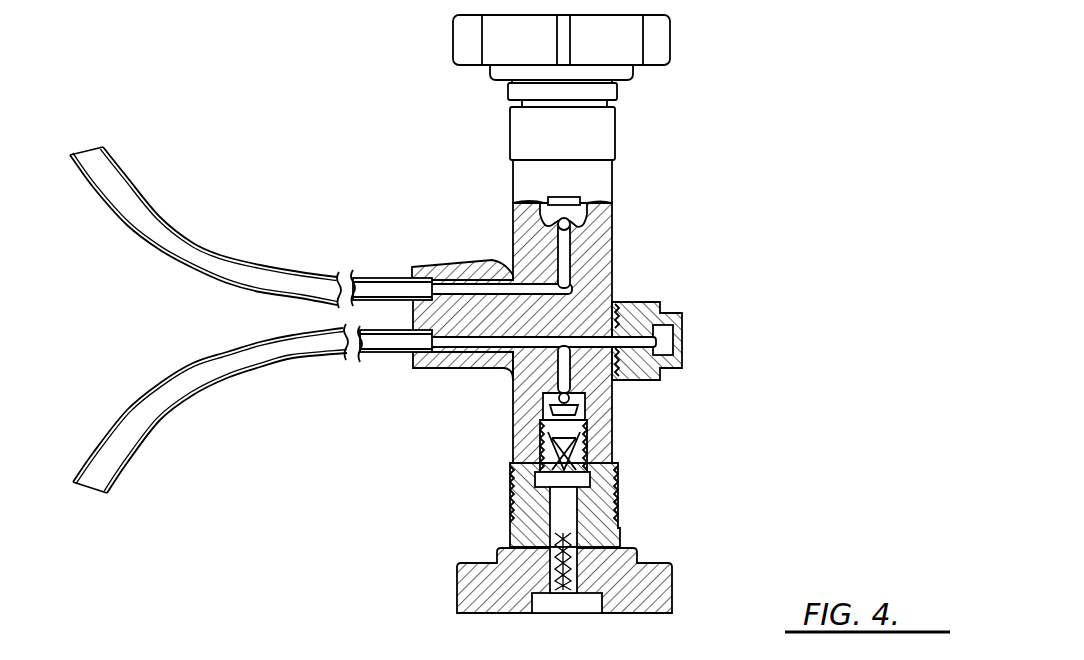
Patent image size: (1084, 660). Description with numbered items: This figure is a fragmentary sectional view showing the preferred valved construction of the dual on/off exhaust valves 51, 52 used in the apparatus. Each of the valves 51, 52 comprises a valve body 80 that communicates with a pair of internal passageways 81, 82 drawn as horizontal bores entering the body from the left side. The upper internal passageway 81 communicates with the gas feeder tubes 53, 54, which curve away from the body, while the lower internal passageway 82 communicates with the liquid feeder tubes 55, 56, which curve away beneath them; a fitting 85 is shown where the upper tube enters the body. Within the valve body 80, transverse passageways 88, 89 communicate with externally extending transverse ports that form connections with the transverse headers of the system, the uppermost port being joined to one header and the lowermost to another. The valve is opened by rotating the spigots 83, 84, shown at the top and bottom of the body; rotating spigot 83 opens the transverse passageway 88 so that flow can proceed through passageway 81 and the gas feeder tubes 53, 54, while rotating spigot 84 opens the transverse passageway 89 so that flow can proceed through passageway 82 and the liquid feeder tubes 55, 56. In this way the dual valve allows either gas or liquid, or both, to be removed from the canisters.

The valve body 80 is at (608, 258).
The internal passageway 81 is at (485, 287).
The internal passageway 82 is at (462, 355).
The spigot 83 is at (658, 38).
The spigot 84 is at (673, 582).
The upper fitting 85 is at (430, 263).
The transverse passageway 88 is at (573, 222).
The transverse passageway 89 is at (540, 403).
The dual on/off exhaust valve 51 is at (669, 368).
The dual on/off exhaust valve 52 is at (613, 412).
The gas feeder tube 53 is at (251, 227).
The gas feeder tube 54 is at (213, 250).
The liquid feeder tube 55 is at (252, 408).
The liquid feeder tube 56 is at (223, 378).